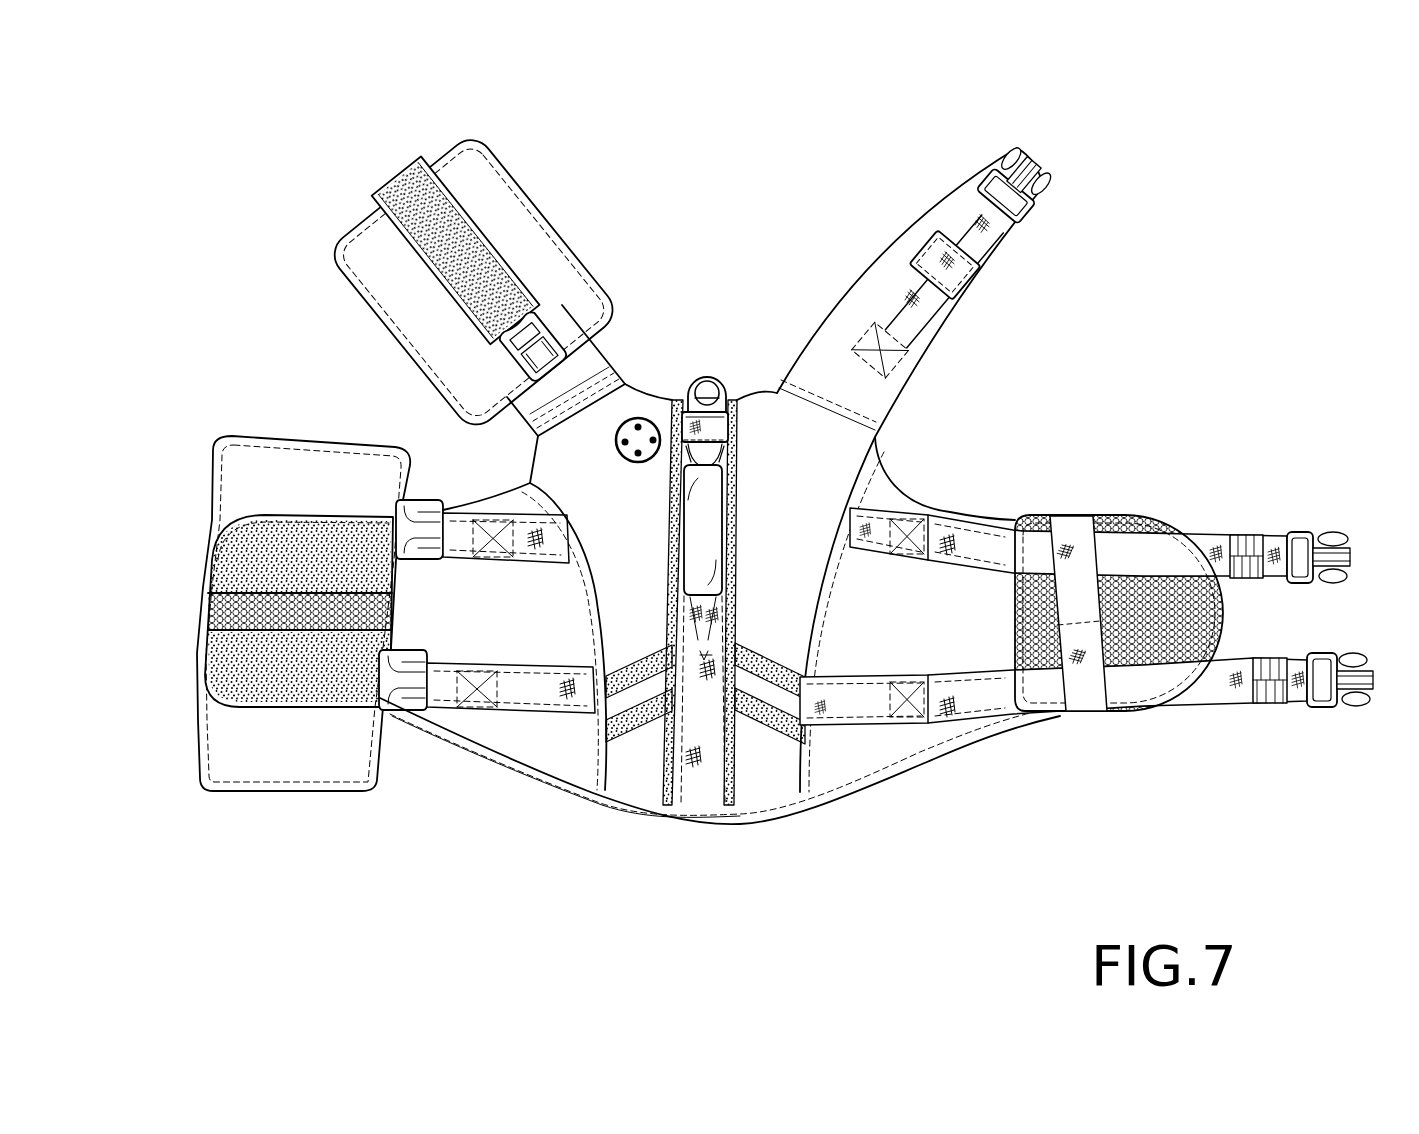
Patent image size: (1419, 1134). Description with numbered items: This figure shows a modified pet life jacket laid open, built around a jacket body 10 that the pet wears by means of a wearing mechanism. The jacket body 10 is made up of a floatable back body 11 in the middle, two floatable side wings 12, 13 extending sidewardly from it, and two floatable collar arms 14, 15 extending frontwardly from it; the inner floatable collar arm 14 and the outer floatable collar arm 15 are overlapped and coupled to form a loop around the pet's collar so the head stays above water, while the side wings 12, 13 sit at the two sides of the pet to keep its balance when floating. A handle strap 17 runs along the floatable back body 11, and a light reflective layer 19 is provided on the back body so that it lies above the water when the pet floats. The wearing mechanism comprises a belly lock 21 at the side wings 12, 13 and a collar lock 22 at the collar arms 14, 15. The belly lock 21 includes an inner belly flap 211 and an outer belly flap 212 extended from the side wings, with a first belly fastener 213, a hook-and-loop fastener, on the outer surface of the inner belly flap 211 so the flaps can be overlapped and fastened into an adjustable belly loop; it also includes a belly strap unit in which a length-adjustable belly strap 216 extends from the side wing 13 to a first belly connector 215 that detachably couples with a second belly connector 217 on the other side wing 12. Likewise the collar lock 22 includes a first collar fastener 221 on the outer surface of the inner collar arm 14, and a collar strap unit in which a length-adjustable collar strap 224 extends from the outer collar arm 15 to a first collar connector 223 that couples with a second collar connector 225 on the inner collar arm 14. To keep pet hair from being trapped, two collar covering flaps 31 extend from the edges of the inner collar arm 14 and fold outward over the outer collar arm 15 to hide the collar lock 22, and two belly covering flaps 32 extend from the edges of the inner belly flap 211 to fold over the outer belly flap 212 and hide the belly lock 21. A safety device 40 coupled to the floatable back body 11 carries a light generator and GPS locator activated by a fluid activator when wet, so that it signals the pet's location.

The jacket body 10 is at (567, 873).
The floatable back body 11 is at (640, 747).
The floatable side wing 12 is at (513, 730).
The floatable side wing 13 is at (943, 733).
The inner floatable collar arm 14 is at (433, 290).
The outer floatable collar arm 15 is at (987, 263).
The handle strap 17 is at (710, 518).
The light reflective layer 19 is at (757, 724).
The belly lock 21 is at (1096, 581).
The collar lock 22 is at (1059, 260).
The collar covering flap 31 is at (537, 243).
The belly covering flap 32 is at (290, 483).
The safety device 40 is at (645, 435).
The inner belly flap 211 is at (275, 587).
The outer belly flap 212 is at (1130, 718).
The first belly fastener 213 is at (277, 687).
The first belly connector 215 is at (1330, 535).
The length-adjustable belly strap 216 is at (1197, 550).
The second belly connector 217 is at (408, 525).
The first collar fastener 221 is at (465, 240).
The first collar connector 223 is at (1050, 187).
The length-adjustable collar strap 224 is at (985, 230).
The second collar connector 225 is at (550, 333).